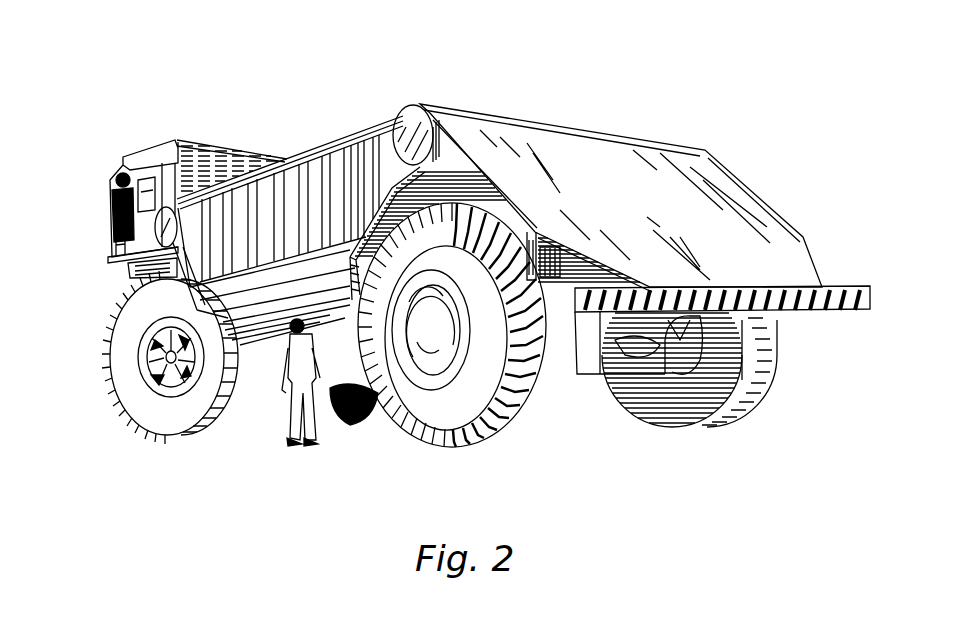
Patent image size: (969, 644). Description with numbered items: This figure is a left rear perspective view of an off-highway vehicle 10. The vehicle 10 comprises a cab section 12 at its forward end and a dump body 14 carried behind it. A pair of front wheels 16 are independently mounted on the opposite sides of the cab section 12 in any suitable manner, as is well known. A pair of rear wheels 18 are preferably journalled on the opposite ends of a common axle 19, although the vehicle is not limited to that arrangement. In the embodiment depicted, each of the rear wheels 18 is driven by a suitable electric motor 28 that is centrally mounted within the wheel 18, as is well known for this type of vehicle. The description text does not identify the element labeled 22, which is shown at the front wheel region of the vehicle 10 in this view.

The off-highway dump truck 10 is at (350, 96).
The operator cab 12 is at (150, 146).
The canopy 14 is at (574, 127).
The front wheel 16 is at (157, 420).
The middle drive wheel 18 is at (434, 419).
The rear wheel 19 is at (566, 373).
The front tire 22 is at (118, 337).
The wheel hub 28 is at (427, 334).